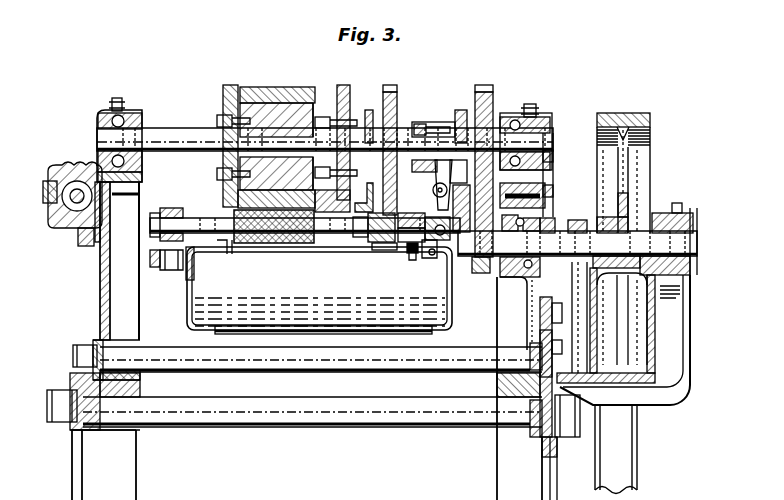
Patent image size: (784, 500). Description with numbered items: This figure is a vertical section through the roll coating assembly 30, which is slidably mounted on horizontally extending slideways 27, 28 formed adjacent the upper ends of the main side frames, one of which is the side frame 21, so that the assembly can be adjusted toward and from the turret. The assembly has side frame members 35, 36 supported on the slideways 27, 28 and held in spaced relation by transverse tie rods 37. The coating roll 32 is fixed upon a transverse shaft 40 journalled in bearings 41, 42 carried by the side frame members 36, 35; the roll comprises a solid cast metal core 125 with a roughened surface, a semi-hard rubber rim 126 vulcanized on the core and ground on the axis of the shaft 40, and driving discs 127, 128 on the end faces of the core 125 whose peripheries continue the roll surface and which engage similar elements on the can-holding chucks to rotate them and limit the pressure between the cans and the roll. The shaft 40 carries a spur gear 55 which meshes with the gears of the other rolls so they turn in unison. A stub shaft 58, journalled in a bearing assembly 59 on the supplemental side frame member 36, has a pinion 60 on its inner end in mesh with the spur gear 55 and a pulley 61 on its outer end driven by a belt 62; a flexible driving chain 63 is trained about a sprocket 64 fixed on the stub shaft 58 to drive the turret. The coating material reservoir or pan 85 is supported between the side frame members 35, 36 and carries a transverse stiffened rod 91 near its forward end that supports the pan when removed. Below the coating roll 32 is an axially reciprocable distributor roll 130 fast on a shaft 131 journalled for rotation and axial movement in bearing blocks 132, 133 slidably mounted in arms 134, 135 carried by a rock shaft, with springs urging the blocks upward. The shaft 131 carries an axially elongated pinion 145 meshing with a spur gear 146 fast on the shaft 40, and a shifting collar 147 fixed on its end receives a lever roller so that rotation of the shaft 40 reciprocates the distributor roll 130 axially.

The side frame 21 is at (134, 499).
The slideway 27 is at (140, 385).
The slideway 28 is at (497, 395).
The roll coating assembly 30 is at (81, 302).
The coating roll 32 is at (312, 84).
The side frame member 35 is at (100, 318).
The side frame member 36 is at (530, 291).
The tie rod 37 is at (274, 363).
The coating roll shaft 40 is at (531, 116).
The bearing 41 is at (541, 129).
The bearing 42 is at (130, 112).
The spur gear 55 is at (494, 92).
The stub shaft 58 is at (510, 252).
The bearing assembly 59 is at (543, 202).
The pinion 60 is at (481, 272).
The pulley 61 is at (638, 118).
The belt 62 is at (633, 462).
The driving chain 63 is at (578, 327).
The sprocket 64 is at (578, 227).
The coating material reservoir 85 is at (195, 277).
The stiffened rod 91 is at (340, 325).
The core 125 is at (287, 150).
The rim 126 is at (247, 87).
The driving disc 127 is at (350, 97).
The driving disc 128 is at (223, 103).
The distributor roll 130 is at (312, 248).
The distributor roll shaft 131 is at (194, 219).
The bearing block 132 is at (163, 208).
The bearing block 133 is at (433, 214).
The arm 134 is at (195, 255).
The arm 135 is at (413, 262).
The pinion 145 is at (382, 242).
The spur gear 146 is at (399, 104).
The shifting collar 147 is at (442, 249).